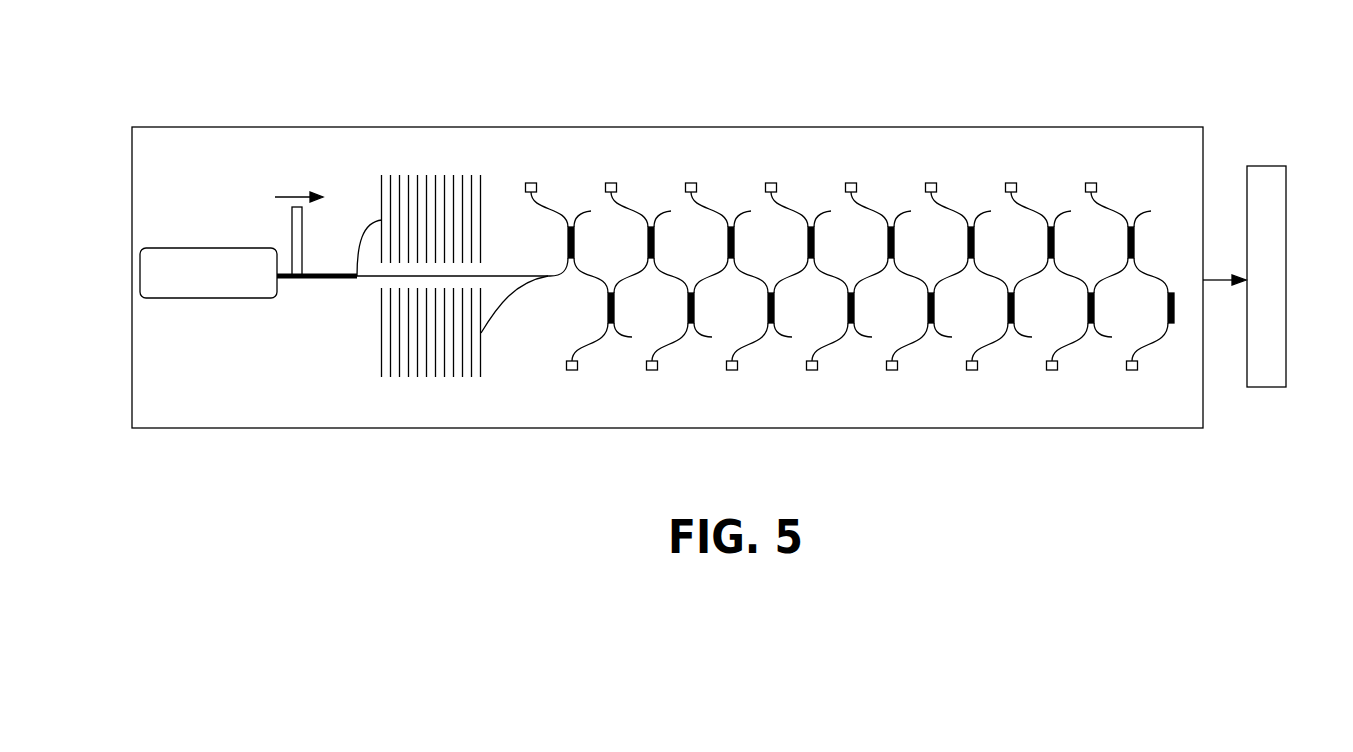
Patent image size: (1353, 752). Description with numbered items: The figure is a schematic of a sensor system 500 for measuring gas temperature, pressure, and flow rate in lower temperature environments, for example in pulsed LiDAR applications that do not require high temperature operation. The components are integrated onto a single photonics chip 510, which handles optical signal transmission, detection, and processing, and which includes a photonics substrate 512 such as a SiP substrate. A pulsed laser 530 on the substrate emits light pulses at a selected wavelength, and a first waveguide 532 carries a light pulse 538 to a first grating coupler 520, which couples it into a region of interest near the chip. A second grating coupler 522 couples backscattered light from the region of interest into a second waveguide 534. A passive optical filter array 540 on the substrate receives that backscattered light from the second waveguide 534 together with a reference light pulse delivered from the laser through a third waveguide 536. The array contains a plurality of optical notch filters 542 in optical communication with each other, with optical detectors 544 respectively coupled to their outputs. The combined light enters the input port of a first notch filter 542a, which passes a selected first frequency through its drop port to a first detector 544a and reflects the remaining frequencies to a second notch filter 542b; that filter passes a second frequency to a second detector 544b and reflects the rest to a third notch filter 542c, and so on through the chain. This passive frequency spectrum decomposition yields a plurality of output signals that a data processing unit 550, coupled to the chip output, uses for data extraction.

The sensor system 500 is at (1027, 97).
The photonics chip 510 is at (947, 428).
The photonics substrate 512 is at (183, 161).
The first grating coupler 520 is at (400, 203).
The second grating coupler 522 is at (400, 309).
The pulsed laser 530 is at (208, 248).
The first waveguide 532 is at (357, 252).
The second waveguide 534 is at (510, 293).
The third waveguide 536 is at (380, 277).
The light pulse 538 is at (292, 245).
The passive optical filter array 540 is at (1155, 240).
The optical notch filters 542 is at (975, 265).
The first notch filter 542a is at (608, 237).
The second notch filter 542b is at (608, 317).
The third notch filter 542c is at (688, 238).
The optical detectors 544 is at (931, 183).
The first detector 544a is at (531, 183).
The second detector 544b is at (572, 370).
The data processing unit 550 is at (1287, 340).